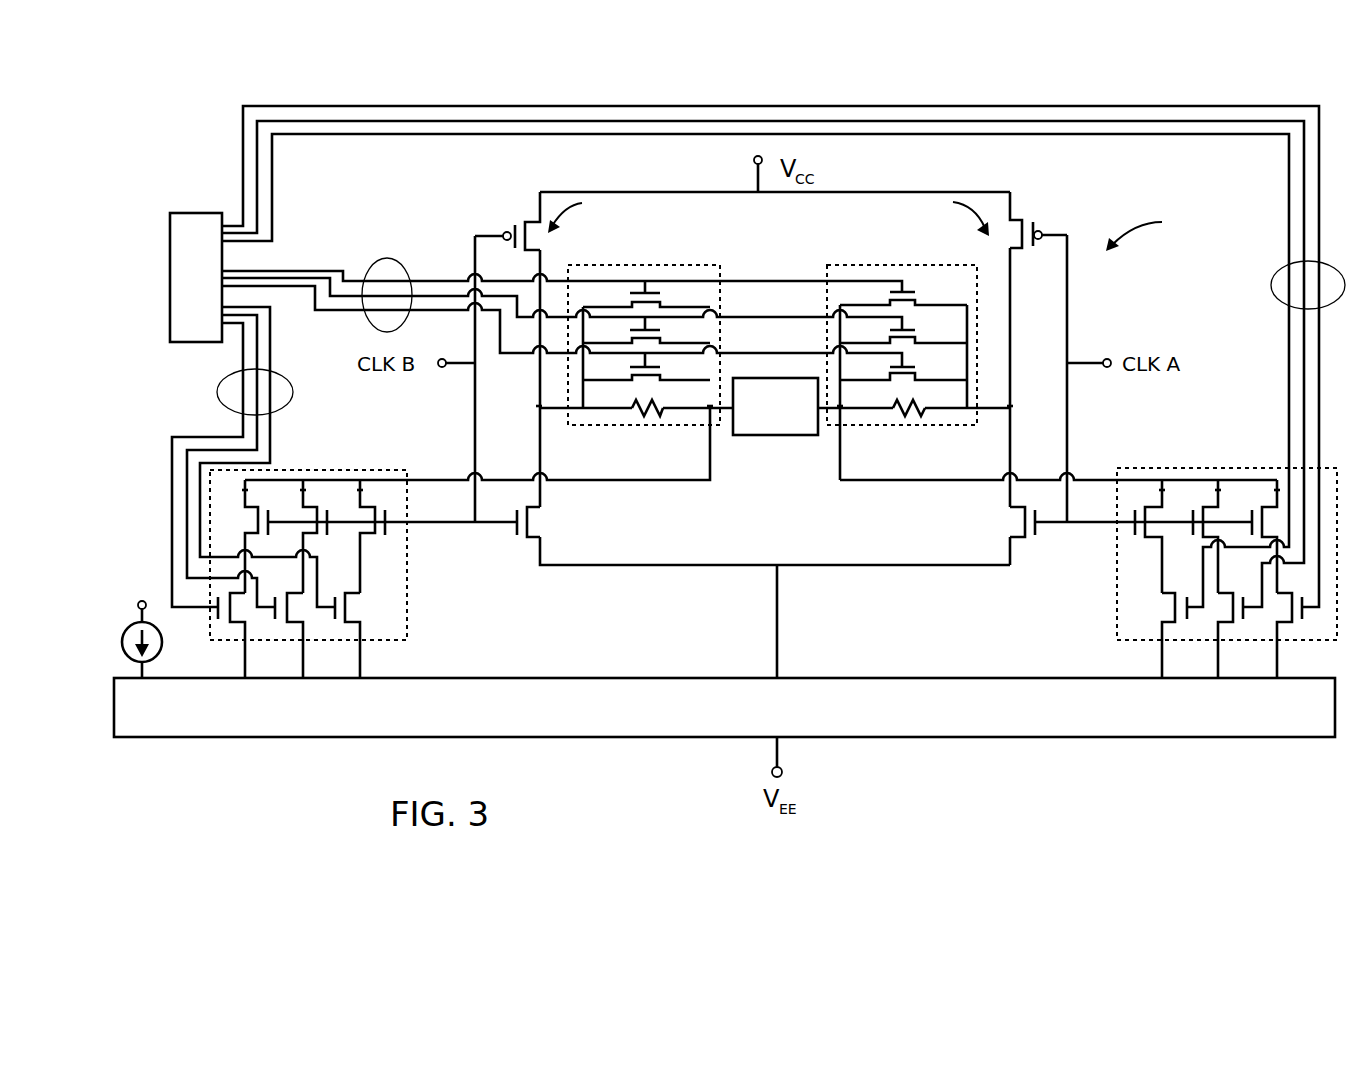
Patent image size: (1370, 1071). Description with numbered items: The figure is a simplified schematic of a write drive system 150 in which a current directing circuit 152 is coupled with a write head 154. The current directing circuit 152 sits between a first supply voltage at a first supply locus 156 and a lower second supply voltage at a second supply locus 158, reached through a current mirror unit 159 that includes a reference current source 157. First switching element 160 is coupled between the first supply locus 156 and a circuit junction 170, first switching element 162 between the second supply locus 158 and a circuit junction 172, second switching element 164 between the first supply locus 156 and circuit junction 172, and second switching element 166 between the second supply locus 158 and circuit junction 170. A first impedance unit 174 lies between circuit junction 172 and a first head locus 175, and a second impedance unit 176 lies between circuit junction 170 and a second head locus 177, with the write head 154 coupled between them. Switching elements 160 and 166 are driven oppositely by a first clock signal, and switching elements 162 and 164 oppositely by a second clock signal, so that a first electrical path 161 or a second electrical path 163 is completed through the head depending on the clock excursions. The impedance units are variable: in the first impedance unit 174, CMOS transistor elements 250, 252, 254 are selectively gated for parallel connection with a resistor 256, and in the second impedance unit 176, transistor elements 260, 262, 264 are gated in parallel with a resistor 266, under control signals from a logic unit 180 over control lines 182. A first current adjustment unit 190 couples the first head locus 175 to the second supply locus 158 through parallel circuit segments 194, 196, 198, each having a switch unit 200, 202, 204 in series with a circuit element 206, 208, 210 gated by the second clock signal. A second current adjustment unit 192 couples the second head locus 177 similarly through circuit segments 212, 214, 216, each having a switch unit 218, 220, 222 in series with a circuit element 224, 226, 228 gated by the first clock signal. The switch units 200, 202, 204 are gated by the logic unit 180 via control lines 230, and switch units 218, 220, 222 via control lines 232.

The write drive system 150 is at (1192, 805).
The current directing circuit 152 is at (1160, 231).
The write head 154 is at (760, 438).
The first supply locus 156 is at (752, 162).
The reference current source 157 is at (130, 622).
The second supply locus 158 is at (783, 773).
The current mirror unit 159 is at (852, 678).
The first switching element 160 is at (1027, 218).
The first electrical path 161 is at (956, 219).
The first switching element 162 is at (527, 538).
The second electrical path 163 is at (580, 220).
The second switching element 164 is at (522, 222).
The second switching element 166 is at (1035, 538).
The circuit junction 170 is at (1017, 408).
The circuit junction 172 is at (538, 408).
The first impedance unit 174 is at (677, 265).
The first head locus 175 is at (710, 410).
The second impedance unit 176 is at (862, 265).
The second head locus 177 is at (843, 410).
The logic unit 180 is at (212, 212).
The control lines 182 is at (385, 258).
The first current adjustment unit 190 is at (408, 588).
The second current adjustment unit 192 is at (1117, 612).
The circuit segment 194 is at (260, 492).
The circuit segment 196 is at (310, 492).
The circuit segment 198 is at (364, 492).
The switch unit 200 is at (240, 628).
The switch unit 202 is at (296, 625).
The switch unit 204 is at (353, 626).
The circuit element 206 is at (252, 531).
The circuit element 208 is at (304, 548).
The circuit element 210 is at (383, 537).
The circuit segment 212 is at (1160, 495).
The circuit segment 214 is at (1217, 495).
The circuit segment 216 is at (1282, 485).
The switch unit 218 is at (1190, 613).
The switch unit 220 is at (1250, 613).
The switch unit 222 is at (1305, 613).
The circuit element 224 is at (1135, 528).
The circuit element 226 is at (1196, 530).
The circuit element 228 is at (1251, 512).
The control lines 230 is at (295, 393).
The control lines 232 is at (1272, 287).
The CMOS transistor element 250 is at (659, 304).
The CMOS transistor element 252 is at (659, 340).
The CMOS transistor element 254 is at (659, 373).
The resistor 256 is at (659, 403).
The CMOS transistor element 260 is at (920, 295).
The CMOS transistor element 262 is at (920, 329).
The CMOS transistor element 264 is at (920, 364).
The resistor 266 is at (898, 405).